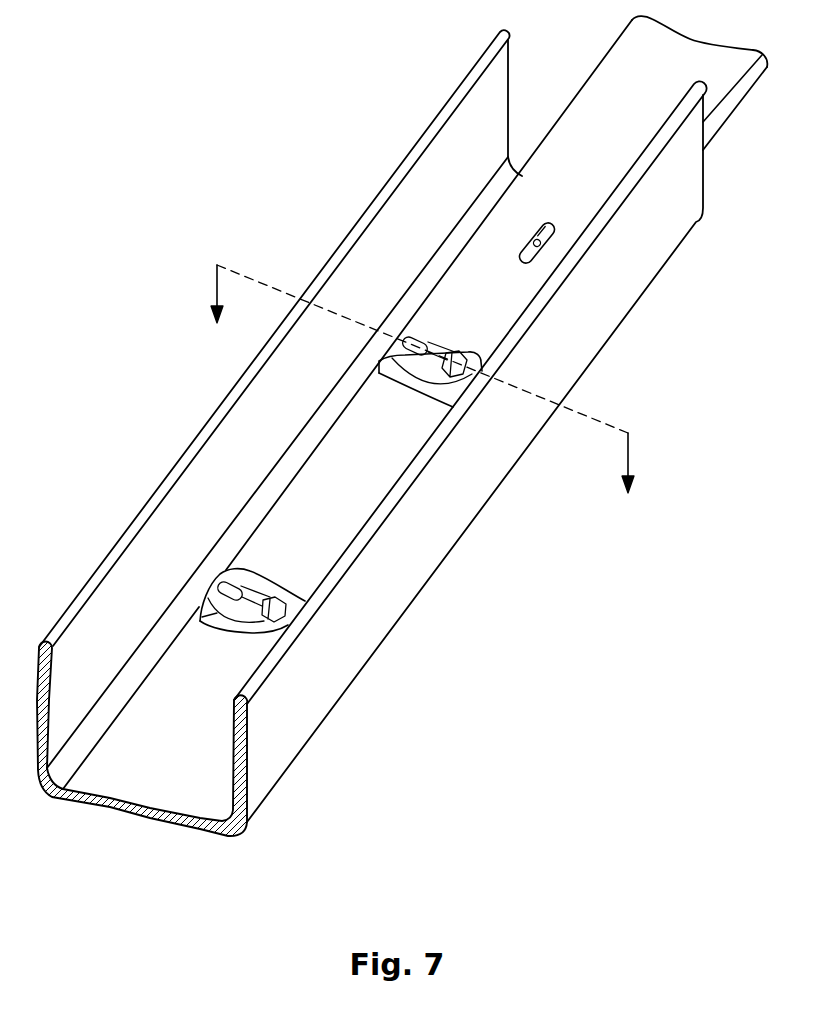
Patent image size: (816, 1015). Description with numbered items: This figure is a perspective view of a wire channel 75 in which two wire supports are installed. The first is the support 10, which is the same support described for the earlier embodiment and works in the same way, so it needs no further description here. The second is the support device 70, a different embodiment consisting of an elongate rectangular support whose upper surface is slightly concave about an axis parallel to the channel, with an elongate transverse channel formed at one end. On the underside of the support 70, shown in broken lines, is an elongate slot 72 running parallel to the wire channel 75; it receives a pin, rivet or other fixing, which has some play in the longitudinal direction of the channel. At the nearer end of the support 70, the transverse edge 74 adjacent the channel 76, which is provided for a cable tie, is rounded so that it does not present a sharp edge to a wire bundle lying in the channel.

The wire support 10 is at (201, 621).
The support device 70 is at (585, 118).
The elongate slot 72 is at (552, 227).
The transverse edge 74 is at (443, 383).
The wire channel 75 is at (400, 581).
The channel 76 is at (380, 373).